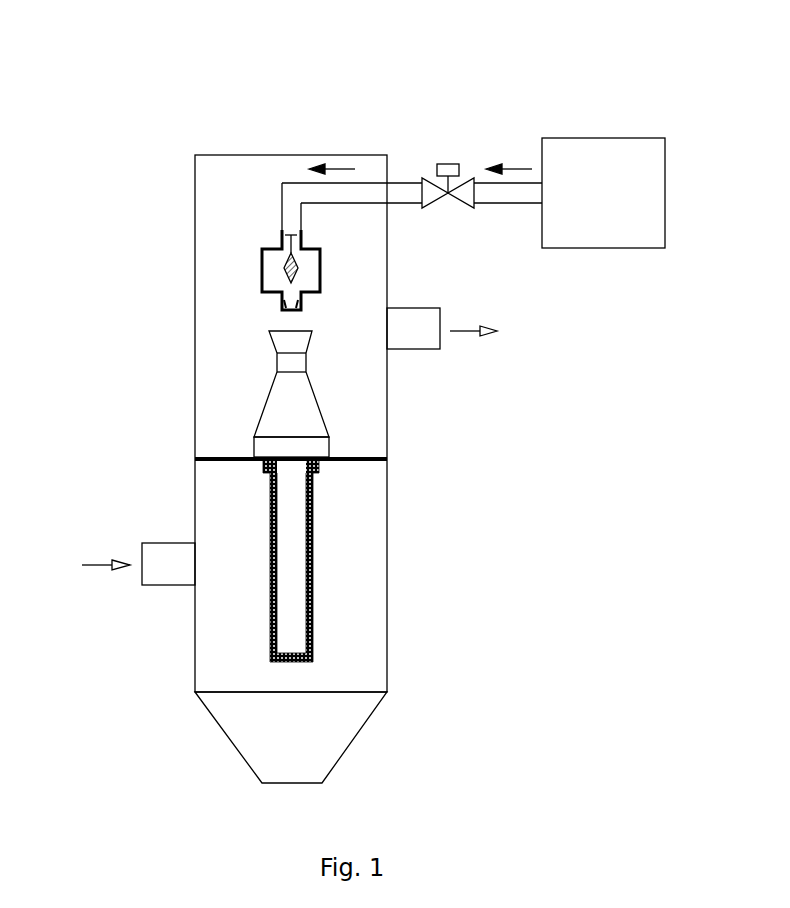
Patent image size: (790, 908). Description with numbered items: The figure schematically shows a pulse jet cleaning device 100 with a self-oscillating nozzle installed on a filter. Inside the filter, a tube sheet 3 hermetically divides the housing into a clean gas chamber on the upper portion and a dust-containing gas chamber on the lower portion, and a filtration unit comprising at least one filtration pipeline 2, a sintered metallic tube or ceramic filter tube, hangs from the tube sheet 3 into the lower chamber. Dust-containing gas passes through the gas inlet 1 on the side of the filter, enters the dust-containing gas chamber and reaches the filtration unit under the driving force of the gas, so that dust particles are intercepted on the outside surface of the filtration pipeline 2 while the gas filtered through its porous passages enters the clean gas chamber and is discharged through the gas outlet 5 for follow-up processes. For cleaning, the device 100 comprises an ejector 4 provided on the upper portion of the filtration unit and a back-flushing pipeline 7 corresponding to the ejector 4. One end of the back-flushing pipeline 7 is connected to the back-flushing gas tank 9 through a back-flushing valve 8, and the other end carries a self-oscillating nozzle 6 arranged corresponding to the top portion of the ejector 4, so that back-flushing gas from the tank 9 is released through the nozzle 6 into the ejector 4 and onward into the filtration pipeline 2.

The pulse jet cleaning device 100 is at (386, 400).
The gas inlet 1 is at (159, 562).
The filtration pipeline 2 is at (313, 589).
The tube sheet 3 is at (233, 457).
The ejector 4 is at (277, 378).
The gas outlet 5 is at (410, 331).
The self-oscillating nozzle 6 is at (268, 251).
The back-flushing pipeline 7 is at (369, 193).
The back-flushing valve 8 is at (447, 164).
The back-flushing gas tank 9 is at (580, 162).